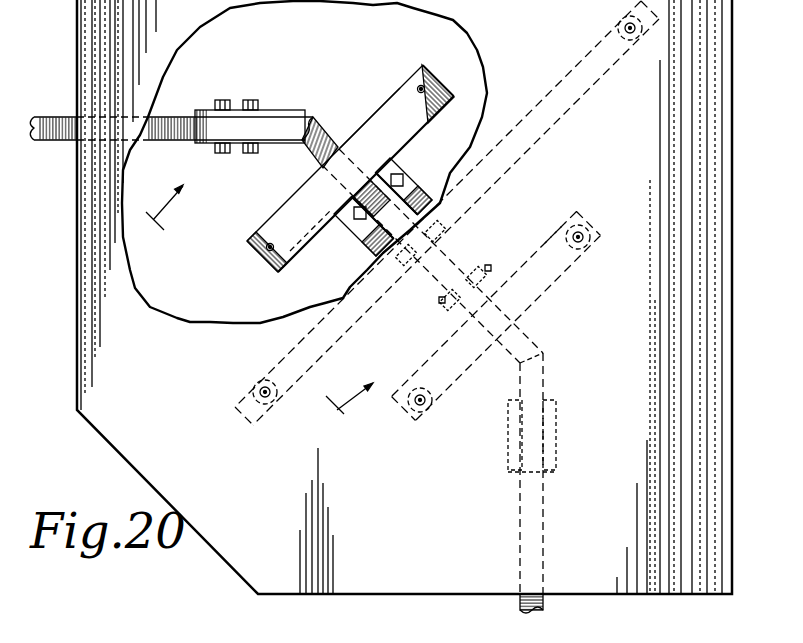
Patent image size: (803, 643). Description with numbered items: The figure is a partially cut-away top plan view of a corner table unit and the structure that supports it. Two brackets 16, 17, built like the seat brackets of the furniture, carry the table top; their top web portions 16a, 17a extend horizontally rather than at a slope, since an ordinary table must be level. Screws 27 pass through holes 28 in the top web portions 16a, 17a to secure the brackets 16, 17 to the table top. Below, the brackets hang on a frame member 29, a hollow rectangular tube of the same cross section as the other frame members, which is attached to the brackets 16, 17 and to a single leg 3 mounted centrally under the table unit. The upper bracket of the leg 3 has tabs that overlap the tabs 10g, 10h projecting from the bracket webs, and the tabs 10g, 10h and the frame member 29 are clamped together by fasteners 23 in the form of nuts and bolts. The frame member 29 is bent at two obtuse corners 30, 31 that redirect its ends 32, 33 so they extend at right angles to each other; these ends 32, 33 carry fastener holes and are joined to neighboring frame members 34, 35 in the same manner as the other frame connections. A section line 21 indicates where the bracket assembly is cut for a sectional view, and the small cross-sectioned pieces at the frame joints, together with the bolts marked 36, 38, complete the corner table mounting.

The leg 3 is at (585, 97).
The tab 10g is at (346, 224).
The tab 10h is at (400, 160).
The bracket 16 is at (398, 107).
The top web portion 16a is at (363, 137).
The bracket 17 is at (575, 263).
The top web portion 17a is at (540, 285).
The section line 21 is at (268, 286).
The fastener 23 is at (402, 178).
The screws 27 is at (585, 232).
The holes 28 is at (425, 88).
The frame member 29 is at (552, 383).
The obtuse corner 30 is at (548, 352).
The obtuse corner 31 is at (313, 117).
The end of frame member 32 is at (208, 115).
The end of frame member 33 is at (548, 438).
The frame member 34 is at (50, 118).
The frame member 35 is at (532, 612).
The bracket 36 is at (477, 242).
The bolt 38 is at (403, 189).